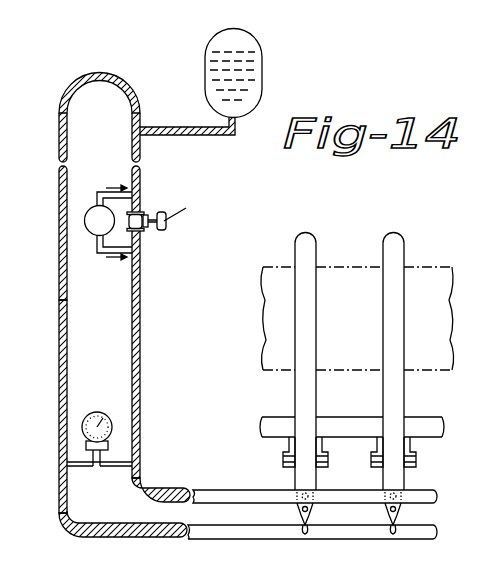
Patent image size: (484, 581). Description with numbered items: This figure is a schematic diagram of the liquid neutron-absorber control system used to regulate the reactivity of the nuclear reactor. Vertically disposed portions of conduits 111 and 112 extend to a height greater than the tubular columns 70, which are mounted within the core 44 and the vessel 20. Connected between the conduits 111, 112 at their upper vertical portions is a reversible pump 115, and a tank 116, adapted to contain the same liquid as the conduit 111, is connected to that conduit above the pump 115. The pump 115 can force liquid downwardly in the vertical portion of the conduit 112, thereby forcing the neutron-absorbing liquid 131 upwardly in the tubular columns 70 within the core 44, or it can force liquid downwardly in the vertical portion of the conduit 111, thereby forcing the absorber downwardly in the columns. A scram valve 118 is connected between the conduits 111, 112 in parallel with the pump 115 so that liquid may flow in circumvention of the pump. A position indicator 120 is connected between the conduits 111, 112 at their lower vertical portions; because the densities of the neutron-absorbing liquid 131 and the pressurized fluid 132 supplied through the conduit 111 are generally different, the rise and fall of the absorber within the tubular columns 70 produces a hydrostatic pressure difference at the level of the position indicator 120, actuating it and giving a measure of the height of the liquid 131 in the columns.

The tank 116 is at (245, 48).
The reversible pump 115 is at (85, 218).
The pressurized fluid 132 is at (60, 248).
The scram valve 118 is at (148, 211).
The conduit 112 is at (221, 320).
The conduit 111 is at (139, 323).
The neutron-absorbing liquid 131 is at (60, 369).
The position indicator 120 is at (88, 413).
The tubular columns 70 is at (395, 248).
The core 44 is at (357, 318).
The vessel 20 is at (365, 410).